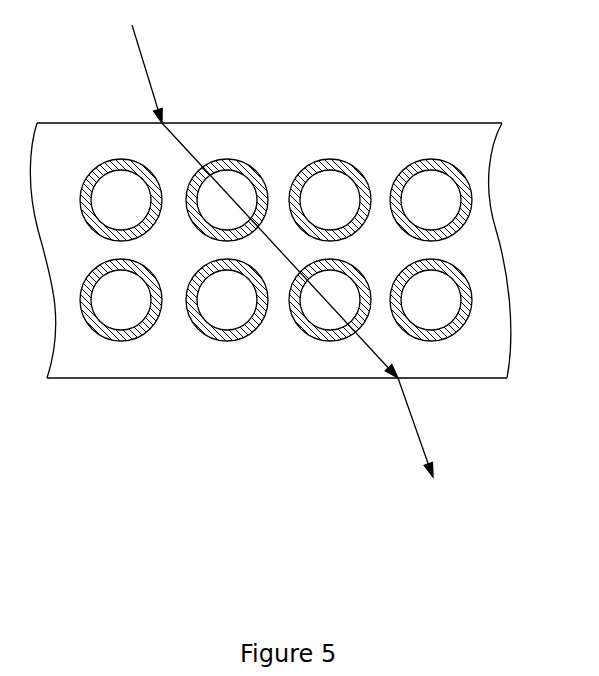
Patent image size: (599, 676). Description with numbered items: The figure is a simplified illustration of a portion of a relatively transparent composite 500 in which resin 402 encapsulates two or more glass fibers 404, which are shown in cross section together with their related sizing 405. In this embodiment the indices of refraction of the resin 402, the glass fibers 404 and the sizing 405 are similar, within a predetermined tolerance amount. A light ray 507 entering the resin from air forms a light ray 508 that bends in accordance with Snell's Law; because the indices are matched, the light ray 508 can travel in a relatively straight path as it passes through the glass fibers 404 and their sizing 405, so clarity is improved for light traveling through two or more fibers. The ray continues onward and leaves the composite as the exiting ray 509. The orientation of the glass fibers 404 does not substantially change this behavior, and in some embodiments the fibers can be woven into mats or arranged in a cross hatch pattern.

The relatively transparent composite 500 is at (292, 323).
The resin 402 is at (500, 123).
The glass fibers 404 is at (233, 163).
The sizing 405 is at (256, 172).
The light ray 507 is at (133, 24).
The light ray 508 is at (181, 142).
The exit beam 509 is at (413, 415).